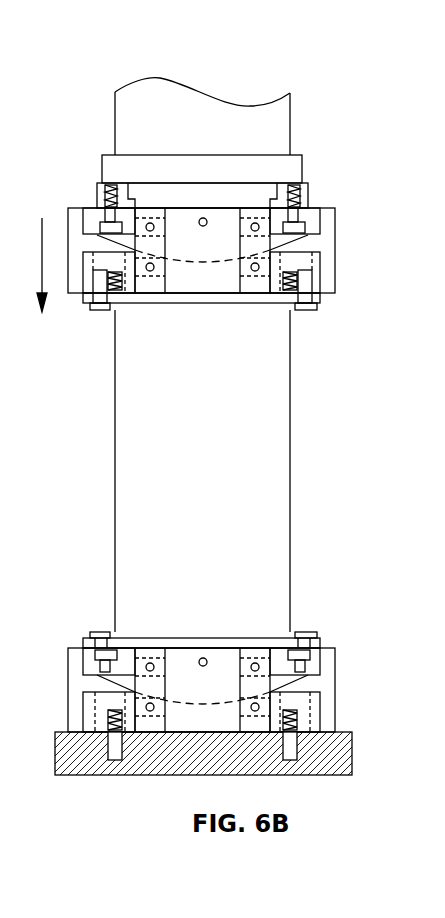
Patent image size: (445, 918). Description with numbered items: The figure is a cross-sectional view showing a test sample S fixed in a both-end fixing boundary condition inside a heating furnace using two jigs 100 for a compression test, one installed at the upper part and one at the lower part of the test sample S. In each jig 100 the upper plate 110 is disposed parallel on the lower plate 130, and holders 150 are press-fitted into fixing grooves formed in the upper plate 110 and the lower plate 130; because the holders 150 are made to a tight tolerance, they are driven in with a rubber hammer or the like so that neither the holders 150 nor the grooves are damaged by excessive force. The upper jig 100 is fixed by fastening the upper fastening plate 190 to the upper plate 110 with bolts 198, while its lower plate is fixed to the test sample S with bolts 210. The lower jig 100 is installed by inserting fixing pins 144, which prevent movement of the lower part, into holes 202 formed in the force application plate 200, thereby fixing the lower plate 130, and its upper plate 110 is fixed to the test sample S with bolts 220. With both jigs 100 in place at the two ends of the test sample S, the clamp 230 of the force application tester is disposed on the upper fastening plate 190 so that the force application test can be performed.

The jig 100 is at (377, 115).
The upper plate 110 is at (318, 227).
The lower plate 130 is at (318, 267).
The fixing pins 144 is at (118, 745).
The holders 150 is at (332, 247).
The upper fastening plate 190 is at (305, 199).
The bolts 198 is at (110, 188).
The force application plate 200 is at (317, 762).
The holes 202 is at (110, 750).
The bolts 210 is at (303, 310).
The bolts 220 is at (307, 630).
The clamp 230 is at (207, 107).
The test sample S is at (275, 474).